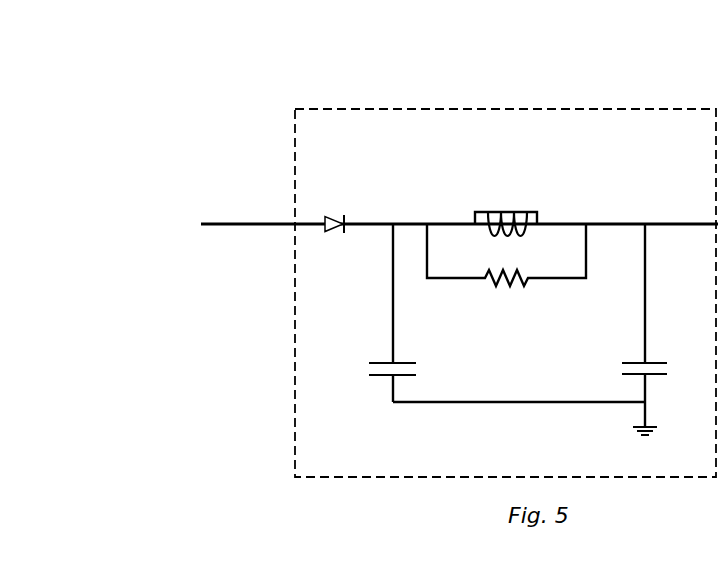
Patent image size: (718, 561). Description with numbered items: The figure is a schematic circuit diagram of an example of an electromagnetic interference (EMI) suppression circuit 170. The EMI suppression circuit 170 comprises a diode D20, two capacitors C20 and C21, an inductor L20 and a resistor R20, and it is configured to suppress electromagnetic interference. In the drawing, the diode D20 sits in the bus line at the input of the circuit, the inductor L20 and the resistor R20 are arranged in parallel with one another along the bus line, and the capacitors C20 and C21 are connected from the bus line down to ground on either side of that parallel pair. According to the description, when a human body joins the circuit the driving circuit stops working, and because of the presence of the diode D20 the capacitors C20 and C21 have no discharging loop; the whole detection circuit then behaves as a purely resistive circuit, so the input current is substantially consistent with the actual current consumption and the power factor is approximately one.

The electromagnetic interference (EMI) suppression circuit 170 is at (174, 120).
The diode D20 is at (330, 213).
The inductor L20 is at (506, 213).
The resistor R20 is at (506, 268).
The capacitor C20 is at (408, 313).
The capacitor C21 is at (626, 325).